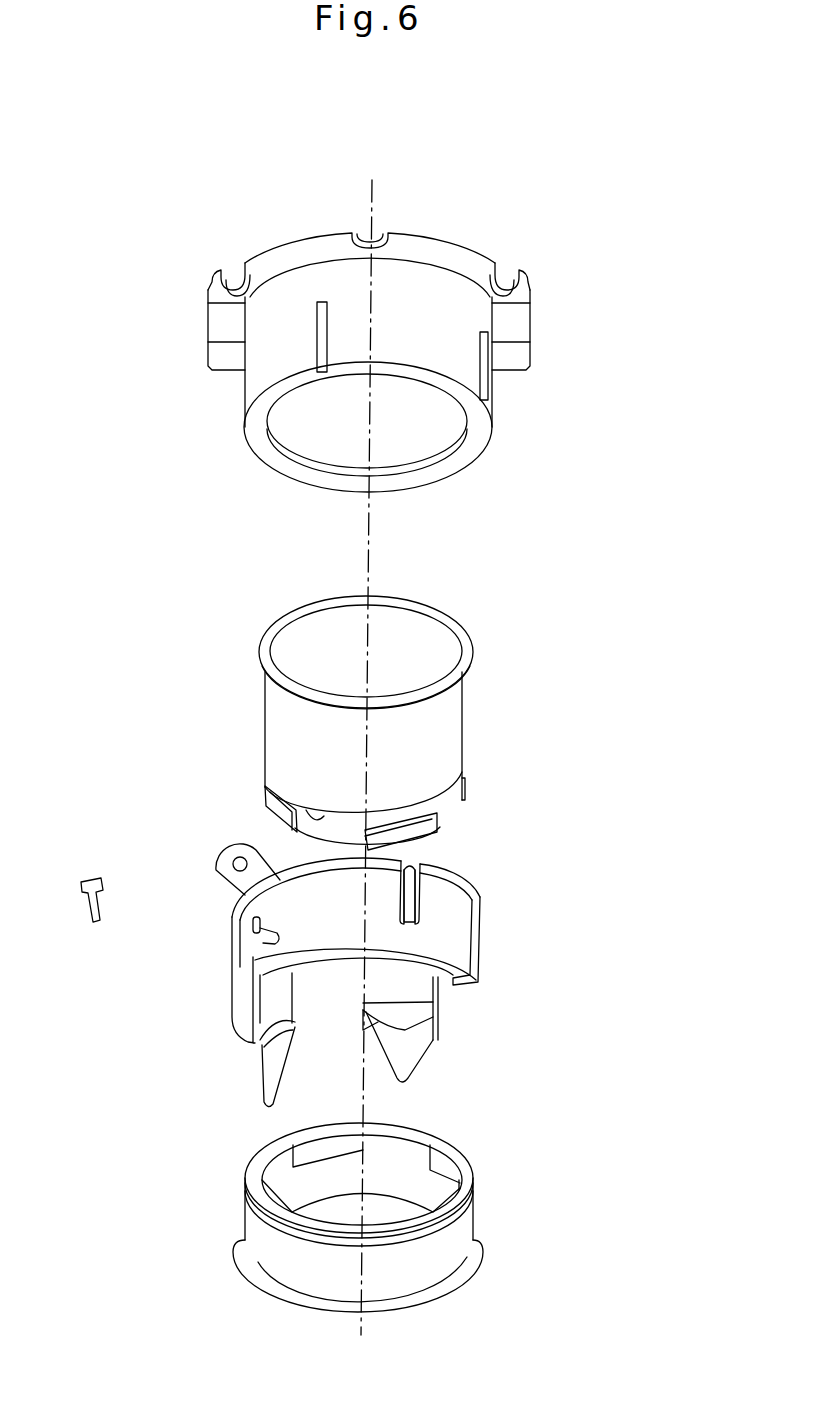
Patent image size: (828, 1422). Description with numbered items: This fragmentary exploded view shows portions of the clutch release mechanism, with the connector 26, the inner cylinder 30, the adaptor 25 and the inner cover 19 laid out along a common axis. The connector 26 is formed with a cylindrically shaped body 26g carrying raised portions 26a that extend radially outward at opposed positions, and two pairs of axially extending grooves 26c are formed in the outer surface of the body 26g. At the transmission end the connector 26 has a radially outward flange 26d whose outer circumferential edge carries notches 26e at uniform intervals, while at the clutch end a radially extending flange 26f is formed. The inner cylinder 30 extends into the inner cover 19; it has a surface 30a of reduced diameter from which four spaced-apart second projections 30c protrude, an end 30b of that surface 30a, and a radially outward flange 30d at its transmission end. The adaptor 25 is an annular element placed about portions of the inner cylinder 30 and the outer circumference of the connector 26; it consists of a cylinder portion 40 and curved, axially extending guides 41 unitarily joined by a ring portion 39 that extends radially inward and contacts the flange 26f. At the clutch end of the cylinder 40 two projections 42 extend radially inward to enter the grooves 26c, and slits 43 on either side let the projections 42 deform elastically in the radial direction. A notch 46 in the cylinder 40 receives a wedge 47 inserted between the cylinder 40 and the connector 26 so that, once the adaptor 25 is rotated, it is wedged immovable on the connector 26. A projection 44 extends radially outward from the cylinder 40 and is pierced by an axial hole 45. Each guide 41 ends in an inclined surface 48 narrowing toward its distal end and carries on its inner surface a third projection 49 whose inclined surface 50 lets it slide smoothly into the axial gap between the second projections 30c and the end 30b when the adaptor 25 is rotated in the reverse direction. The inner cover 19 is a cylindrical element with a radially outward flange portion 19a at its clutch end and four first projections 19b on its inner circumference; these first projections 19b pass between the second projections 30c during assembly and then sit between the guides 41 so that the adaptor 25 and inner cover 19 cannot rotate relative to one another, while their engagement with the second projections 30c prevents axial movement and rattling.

The inner cover 19 is at (620, 1120).
The flange portion 19a is at (473, 1247).
The first projections 19b is at (443, 1165).
The adaptor 25 is at (622, 838).
The connector 26 is at (598, 236).
The raised portions 26a is at (220, 322).
The grooves 26c is at (320, 352).
The flange 26d is at (414, 252).
The notches 26e is at (229, 272).
The flange 26f is at (290, 470).
The cylindrically shaped body 26g is at (438, 303).
The inner cylinder 30 is at (580, 598).
The surface 30a is at (440, 812).
The end 30b is at (310, 806).
The second projections 30c is at (383, 837).
The flange 30d is at (458, 627).
The ring portion 39 is at (455, 962).
The cylinder portion 40 is at (482, 928).
The guides 41 is at (446, 1031).
The projections 42 is at (413, 863).
The slits 43 is at (387, 892).
The projection 44 is at (222, 856).
The hole 45 is at (233, 868).
The notch 46 is at (232, 967).
The wedge 47 is at (88, 878).
The inclined surface 48 is at (420, 1063).
The third projections 49 is at (415, 1016).
The inclined surfaces 50 is at (377, 1027).